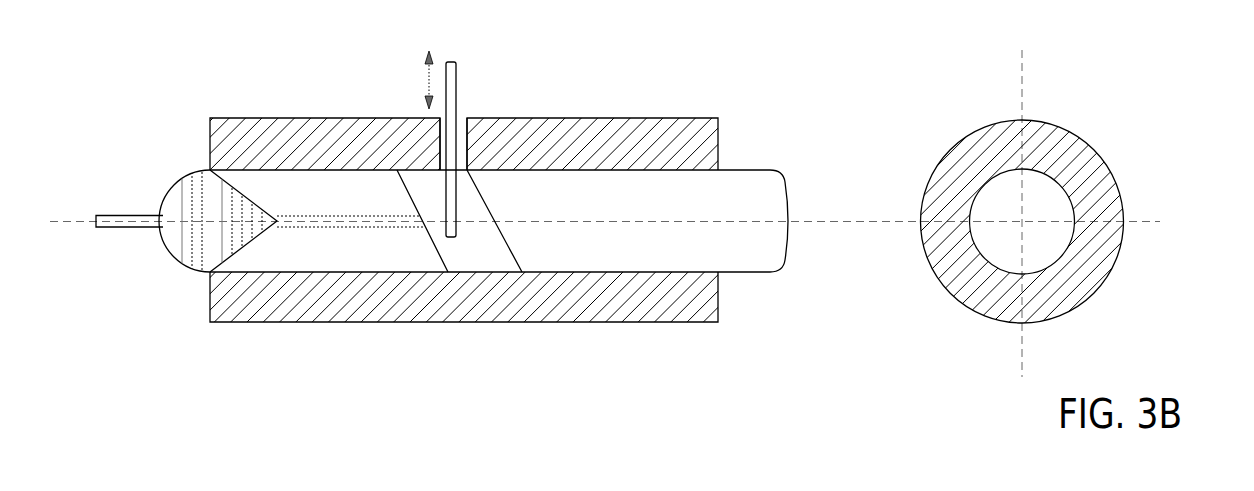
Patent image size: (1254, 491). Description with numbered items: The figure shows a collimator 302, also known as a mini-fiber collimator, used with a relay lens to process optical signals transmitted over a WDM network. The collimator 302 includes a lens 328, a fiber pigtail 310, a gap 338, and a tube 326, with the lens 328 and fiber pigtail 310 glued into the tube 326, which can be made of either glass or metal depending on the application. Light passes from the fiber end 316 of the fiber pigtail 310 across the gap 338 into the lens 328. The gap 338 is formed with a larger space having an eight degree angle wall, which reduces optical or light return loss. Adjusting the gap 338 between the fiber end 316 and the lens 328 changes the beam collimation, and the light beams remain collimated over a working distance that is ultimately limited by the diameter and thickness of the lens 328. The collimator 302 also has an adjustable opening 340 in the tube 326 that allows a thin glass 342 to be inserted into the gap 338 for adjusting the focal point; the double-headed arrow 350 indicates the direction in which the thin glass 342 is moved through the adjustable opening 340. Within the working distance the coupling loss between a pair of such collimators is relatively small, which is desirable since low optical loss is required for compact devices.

The collimator 302 is at (160, 75).
The fiber pigtail 310 is at (365, 260).
The fiber end 316 is at (140, 212).
The tube 326 is at (677, 159).
The lens 328 is at (680, 260).
The gap 338 is at (498, 265).
The adjustable opening 340 is at (466, 117).
The thin glass 342 is at (452, 61).
The movement direction arrow 350 is at (427, 84).